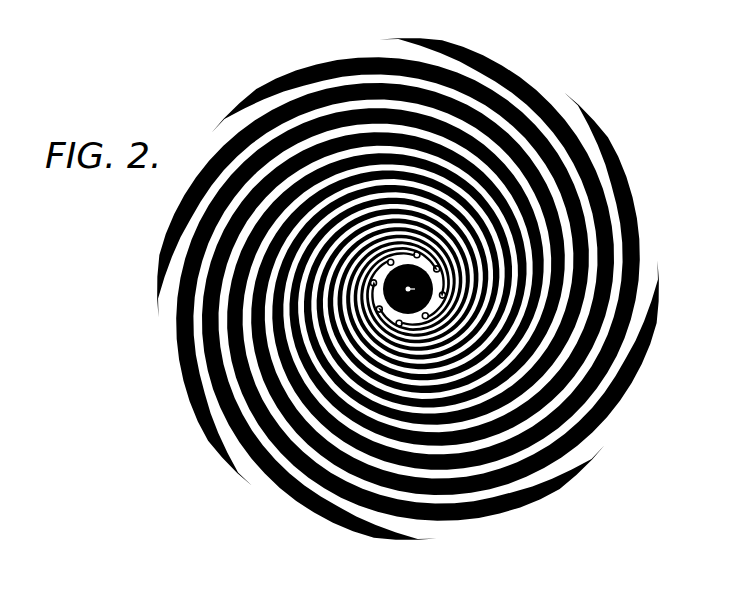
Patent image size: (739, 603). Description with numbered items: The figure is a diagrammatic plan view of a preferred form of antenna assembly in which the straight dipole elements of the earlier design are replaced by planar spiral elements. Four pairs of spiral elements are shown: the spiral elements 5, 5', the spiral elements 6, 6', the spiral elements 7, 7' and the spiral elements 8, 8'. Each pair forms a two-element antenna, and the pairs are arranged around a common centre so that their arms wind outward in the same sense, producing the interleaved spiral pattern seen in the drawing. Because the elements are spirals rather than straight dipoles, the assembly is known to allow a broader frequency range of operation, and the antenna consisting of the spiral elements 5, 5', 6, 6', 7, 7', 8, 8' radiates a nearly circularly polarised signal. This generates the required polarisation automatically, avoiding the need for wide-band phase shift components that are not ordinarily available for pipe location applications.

The planar spiral element 5 is at (453, 226).
The planar spiral element 5' is at (364, 361).
The planar spiral element 6 is at (466, 334).
The planar spiral element 6' is at (344, 245).
The planar spiral element 7 is at (472, 287).
The planar spiral element 7' is at (344, 291).
The planar spiral element 8 is at (410, 348).
The planar spiral element 8' is at (406, 242).